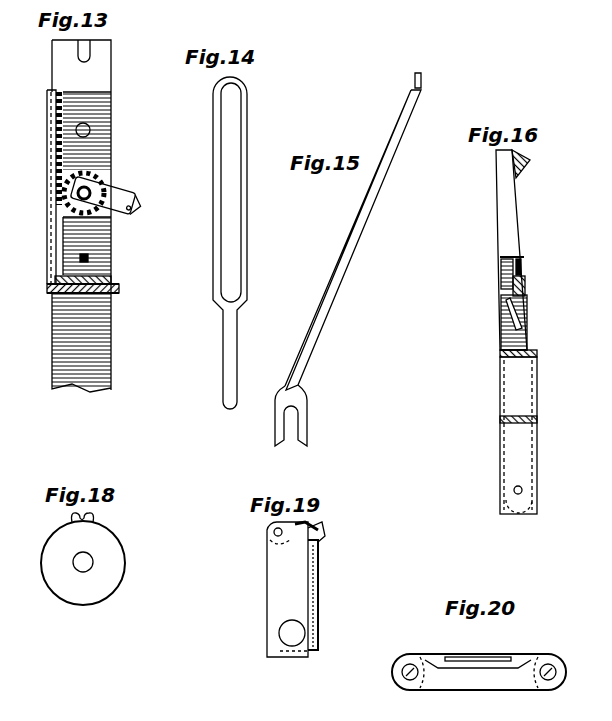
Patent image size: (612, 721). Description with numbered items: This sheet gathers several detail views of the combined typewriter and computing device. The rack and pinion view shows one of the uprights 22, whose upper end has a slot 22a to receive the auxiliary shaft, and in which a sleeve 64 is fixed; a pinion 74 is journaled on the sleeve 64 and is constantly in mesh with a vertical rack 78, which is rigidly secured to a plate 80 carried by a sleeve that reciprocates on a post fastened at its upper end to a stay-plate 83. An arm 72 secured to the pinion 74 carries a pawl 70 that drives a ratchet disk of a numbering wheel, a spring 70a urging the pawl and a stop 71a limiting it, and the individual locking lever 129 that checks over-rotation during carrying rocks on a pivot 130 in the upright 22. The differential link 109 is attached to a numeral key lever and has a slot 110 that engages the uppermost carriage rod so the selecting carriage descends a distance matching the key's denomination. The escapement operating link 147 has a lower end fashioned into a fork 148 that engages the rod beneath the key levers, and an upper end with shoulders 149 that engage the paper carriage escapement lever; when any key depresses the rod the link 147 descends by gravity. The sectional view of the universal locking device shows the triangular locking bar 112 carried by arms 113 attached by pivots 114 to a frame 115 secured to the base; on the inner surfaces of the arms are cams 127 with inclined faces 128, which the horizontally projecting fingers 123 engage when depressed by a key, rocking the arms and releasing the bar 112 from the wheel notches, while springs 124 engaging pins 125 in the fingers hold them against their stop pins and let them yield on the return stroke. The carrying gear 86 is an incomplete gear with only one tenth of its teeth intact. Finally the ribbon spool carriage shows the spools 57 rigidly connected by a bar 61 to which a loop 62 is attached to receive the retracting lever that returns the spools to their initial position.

In FIG. 13, the uprights 22 is at (105, 132).
In FIG. 13, the slots 22a is at (84, 57).
In FIG. 13, the sleeves 64 is at (91, 195).
In FIG. 13, the pawl 70 is at (137, 212).
In FIG. 19, the pawl 70 is at (325, 532).
In FIG. 13, the springs 70a is at (120, 186).
In FIG. 19, the springs 70a is at (320, 590).
In FIG. 19, the stops 71a is at (300, 538).
In FIG. 13, the arm 72 is at (112, 240).
In FIG. 19, the arm 72 is at (270, 592).
In FIG. 13, the pinion 74 is at (56, 188).
In FIG. 13, the vertical rack 78 is at (52, 228).
In FIG. 13, the plate 80 is at (116, 293).
In FIG. 13, the stay-plate 83 is at (112, 280).
In FIG. 13, the individual locking lever 129 is at (88, 262).
In FIG. 13, the pivot 130 is at (60, 258).
In FIG. 14, the link 109 is at (213, 180).
In FIG. 14, the slot 110 is at (232, 236).
In FIG. 15, the link 147 is at (345, 292).
In FIG. 15, the fork 148 is at (303, 413).
In FIG. 15, the shoulders 149 is at (421, 84).
In FIG. 16, the universal locking bar 112 is at (528, 168).
In FIG. 16, the arms 113 is at (500, 257).
In FIG. 16, the pivots 114 is at (514, 492).
In FIG. 16, the frame 115 is at (537, 378).
In FIG. 16, the fingers 123 is at (525, 286).
In FIG. 16, the springs 124 is at (500, 280).
In FIG. 16, the pins 125 is at (522, 268).
In FIG. 16, the cams 127 is at (500, 305).
In FIG. 16, the inclined faces 128 is at (522, 305).
In FIG. 18, the carrying gear 86 is at (48, 580).
In FIG. 20, the ribbon spools 57 is at (397, 680).
In FIG. 20, the bar 61 is at (520, 655).
In FIG. 20, the loop 62 is at (475, 657).